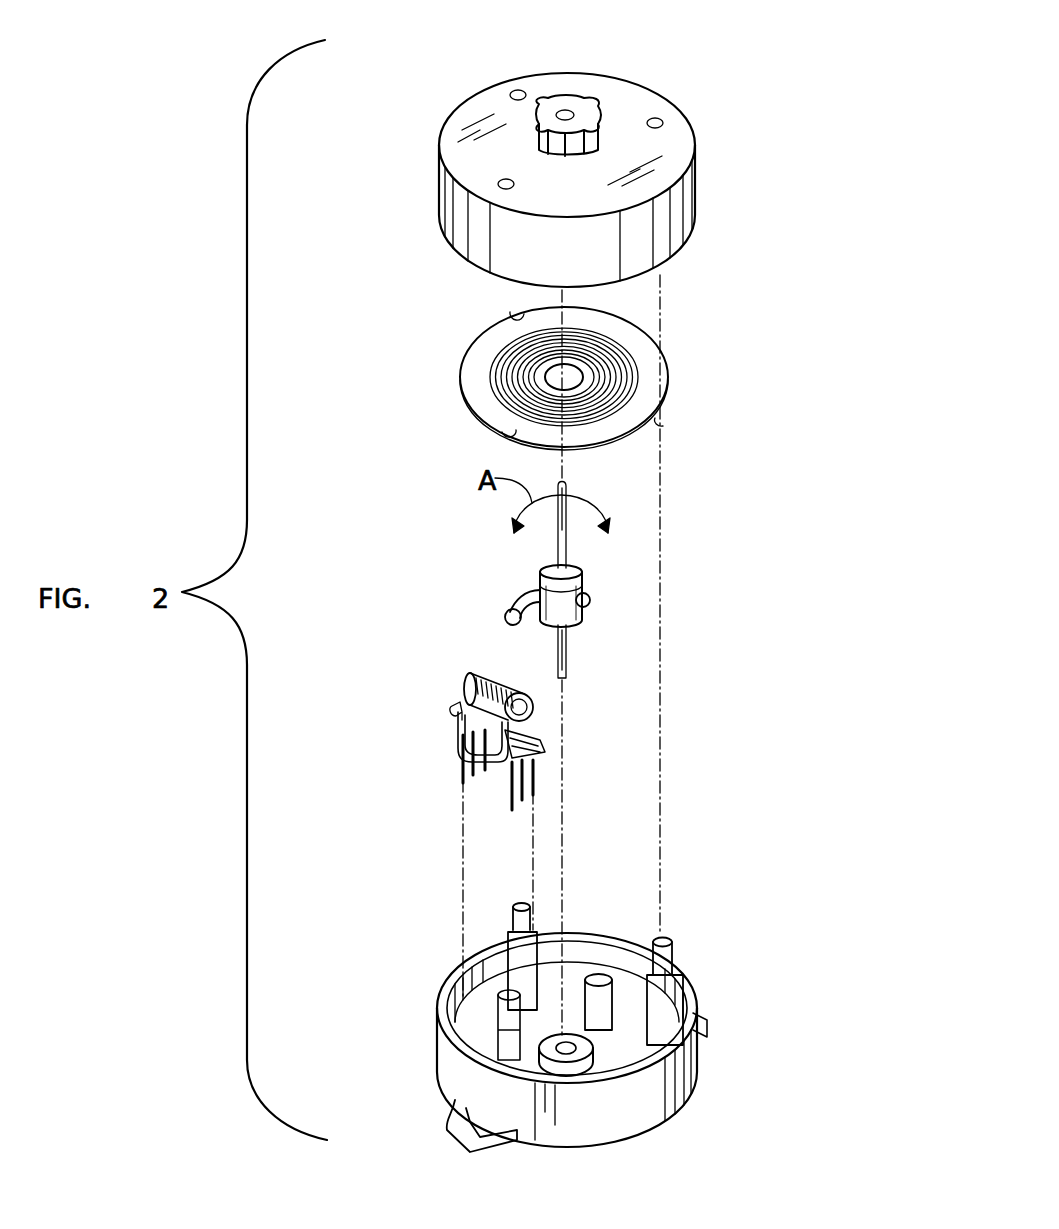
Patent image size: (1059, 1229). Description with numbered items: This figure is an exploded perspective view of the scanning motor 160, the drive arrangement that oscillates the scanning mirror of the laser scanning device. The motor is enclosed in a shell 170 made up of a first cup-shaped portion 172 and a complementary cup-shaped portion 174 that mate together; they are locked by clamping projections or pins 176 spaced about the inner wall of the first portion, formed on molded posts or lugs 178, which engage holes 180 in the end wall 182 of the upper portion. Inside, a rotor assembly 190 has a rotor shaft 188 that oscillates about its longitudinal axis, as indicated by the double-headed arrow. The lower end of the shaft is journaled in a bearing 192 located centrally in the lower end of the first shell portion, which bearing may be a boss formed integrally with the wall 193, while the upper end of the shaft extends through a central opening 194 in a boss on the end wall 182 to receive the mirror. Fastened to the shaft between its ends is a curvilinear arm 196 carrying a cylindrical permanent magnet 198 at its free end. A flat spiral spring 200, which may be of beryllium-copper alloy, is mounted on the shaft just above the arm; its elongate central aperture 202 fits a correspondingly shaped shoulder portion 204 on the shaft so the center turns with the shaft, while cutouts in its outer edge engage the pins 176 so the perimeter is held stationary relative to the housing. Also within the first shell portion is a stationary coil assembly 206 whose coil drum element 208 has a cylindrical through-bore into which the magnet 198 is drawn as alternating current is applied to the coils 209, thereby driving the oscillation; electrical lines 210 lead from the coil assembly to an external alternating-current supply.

The scanning motor 160 is at (670, 522).
The shell 170 is at (672, 902).
The first cup-shaped portion 172 is at (602, 1030).
The complementary cup-shaped portion 174 is at (658, 148).
The clamping projections or pins 176 is at (513, 907).
The posts or lugs 178 is at (507, 940).
The holes 180 is at (512, 90).
The end wall 182 is at (633, 100).
The rotor shaft 188 is at (566, 675).
The rotor assembly 190 is at (633, 662).
The bearing 192 is at (573, 1063).
The wall 193 is at (616, 1050).
The central opening 194 is at (567, 112).
The curvilinear arm 196 is at (606, 578).
The permanent magnet 198 is at (505, 618).
The spiral spring 200 is at (607, 405).
The elongate central aperture 202 is at (480, 405).
The shoulder portion 204 is at (582, 566).
The stationary coil assembly 206 is at (602, 743).
The coil drum element 208 is at (560, 725).
The coils 209 is at (478, 676).
The electrical lines 210 is at (460, 775).